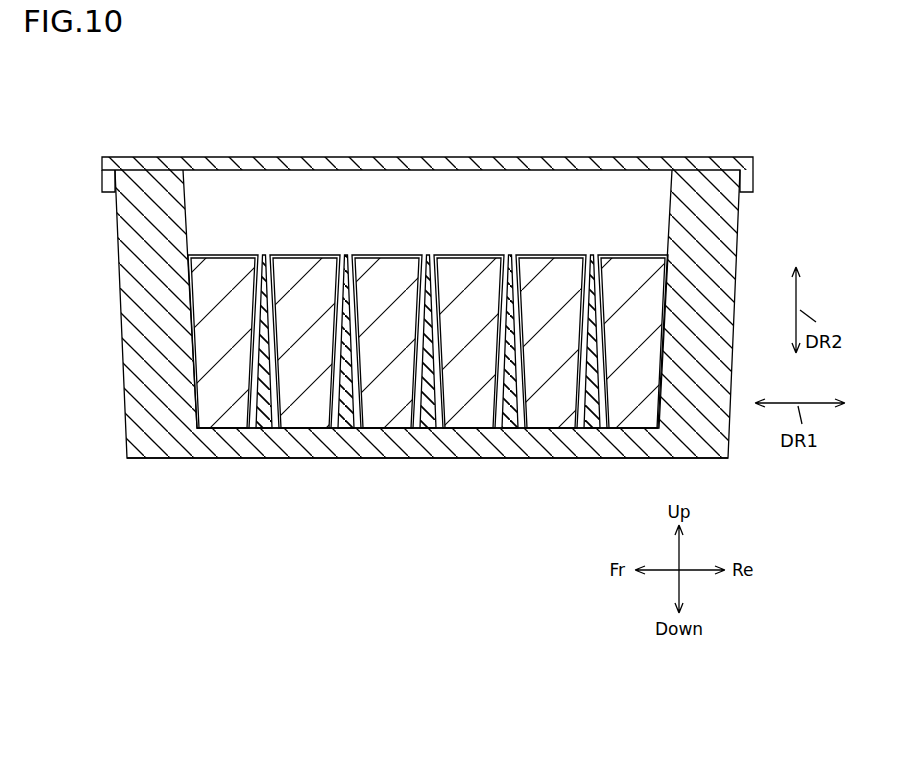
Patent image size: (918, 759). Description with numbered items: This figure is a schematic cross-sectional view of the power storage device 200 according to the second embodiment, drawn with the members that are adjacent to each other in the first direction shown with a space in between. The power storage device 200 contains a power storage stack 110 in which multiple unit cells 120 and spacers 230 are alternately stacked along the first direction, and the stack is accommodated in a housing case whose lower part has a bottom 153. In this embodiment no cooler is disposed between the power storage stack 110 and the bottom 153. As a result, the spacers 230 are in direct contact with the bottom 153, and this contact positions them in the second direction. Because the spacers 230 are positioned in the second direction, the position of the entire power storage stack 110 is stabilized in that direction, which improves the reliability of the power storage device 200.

The power storage stack 110 is at (203, 108).
The unit cell 120 is at (226, 298).
The spacer 230 is at (264, 254).
The bottom 153 is at (437, 440).
The power storage device 200 is at (760, 131).